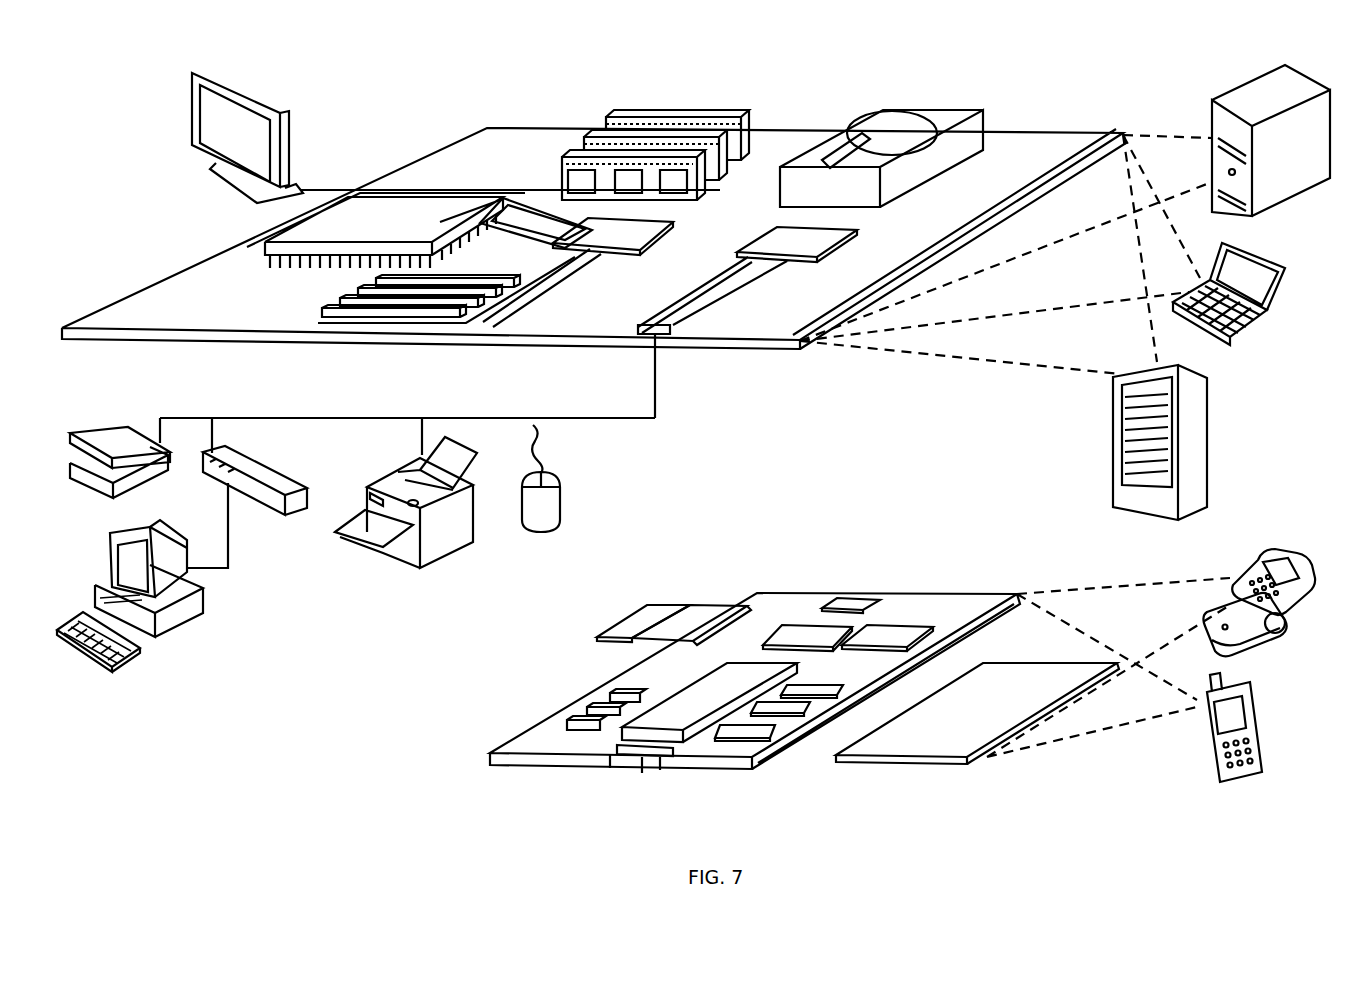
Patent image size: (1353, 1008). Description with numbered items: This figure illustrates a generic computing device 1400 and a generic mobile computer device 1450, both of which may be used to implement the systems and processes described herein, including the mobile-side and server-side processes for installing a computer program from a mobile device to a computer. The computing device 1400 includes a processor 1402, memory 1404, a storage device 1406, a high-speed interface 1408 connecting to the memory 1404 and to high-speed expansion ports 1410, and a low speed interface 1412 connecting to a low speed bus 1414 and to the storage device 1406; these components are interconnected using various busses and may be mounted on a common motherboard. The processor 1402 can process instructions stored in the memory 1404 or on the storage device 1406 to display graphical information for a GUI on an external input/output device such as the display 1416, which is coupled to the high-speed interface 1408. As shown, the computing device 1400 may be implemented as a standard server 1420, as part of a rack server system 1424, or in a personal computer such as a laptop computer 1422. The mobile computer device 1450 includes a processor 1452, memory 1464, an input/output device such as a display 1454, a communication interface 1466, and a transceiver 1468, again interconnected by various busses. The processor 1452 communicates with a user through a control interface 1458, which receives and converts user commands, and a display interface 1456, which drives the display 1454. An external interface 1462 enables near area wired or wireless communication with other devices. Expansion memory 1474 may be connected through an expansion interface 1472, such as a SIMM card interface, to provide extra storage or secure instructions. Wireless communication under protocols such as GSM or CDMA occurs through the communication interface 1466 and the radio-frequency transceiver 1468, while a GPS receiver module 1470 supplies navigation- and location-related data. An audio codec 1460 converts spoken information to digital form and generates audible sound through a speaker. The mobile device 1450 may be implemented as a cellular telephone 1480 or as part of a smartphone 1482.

The computing device 1400 is at (399, 96).
The processor 1402 is at (248, 247).
The memory 1404 is at (617, 123).
The storage device 1406 is at (869, 114).
The high-speed interface 1408 is at (542, 192).
The high-speed expansion ports 1410 is at (320, 297).
The low speed interface 1412 is at (775, 233).
The low speed bus 1414 is at (673, 337).
The display 1416 is at (192, 70).
The standard server 1420 is at (1212, 118).
The laptop computer 1422 is at (1290, 266).
The rack server system 1424 is at (1112, 463).
The mobile computer device 1450 is at (460, 763).
The processor 1452 is at (674, 722).
The display 1454 is at (940, 748).
The display interface 1456 is at (765, 741).
The control interface 1458 is at (812, 696).
The audio codec 1460 is at (822, 715).
The external interface 1462 is at (641, 775).
The memory 1464 is at (588, 712).
The communication interface 1466 is at (806, 630).
The transceiver 1468 is at (890, 635).
The GPS receiver module 1470 is at (862, 595).
The expansion interface 1472 is at (716, 606).
The expansion memory 1474 is at (647, 604).
The cellular telephone 1480 is at (1258, 555).
The smartphone 1482 is at (1195, 735).